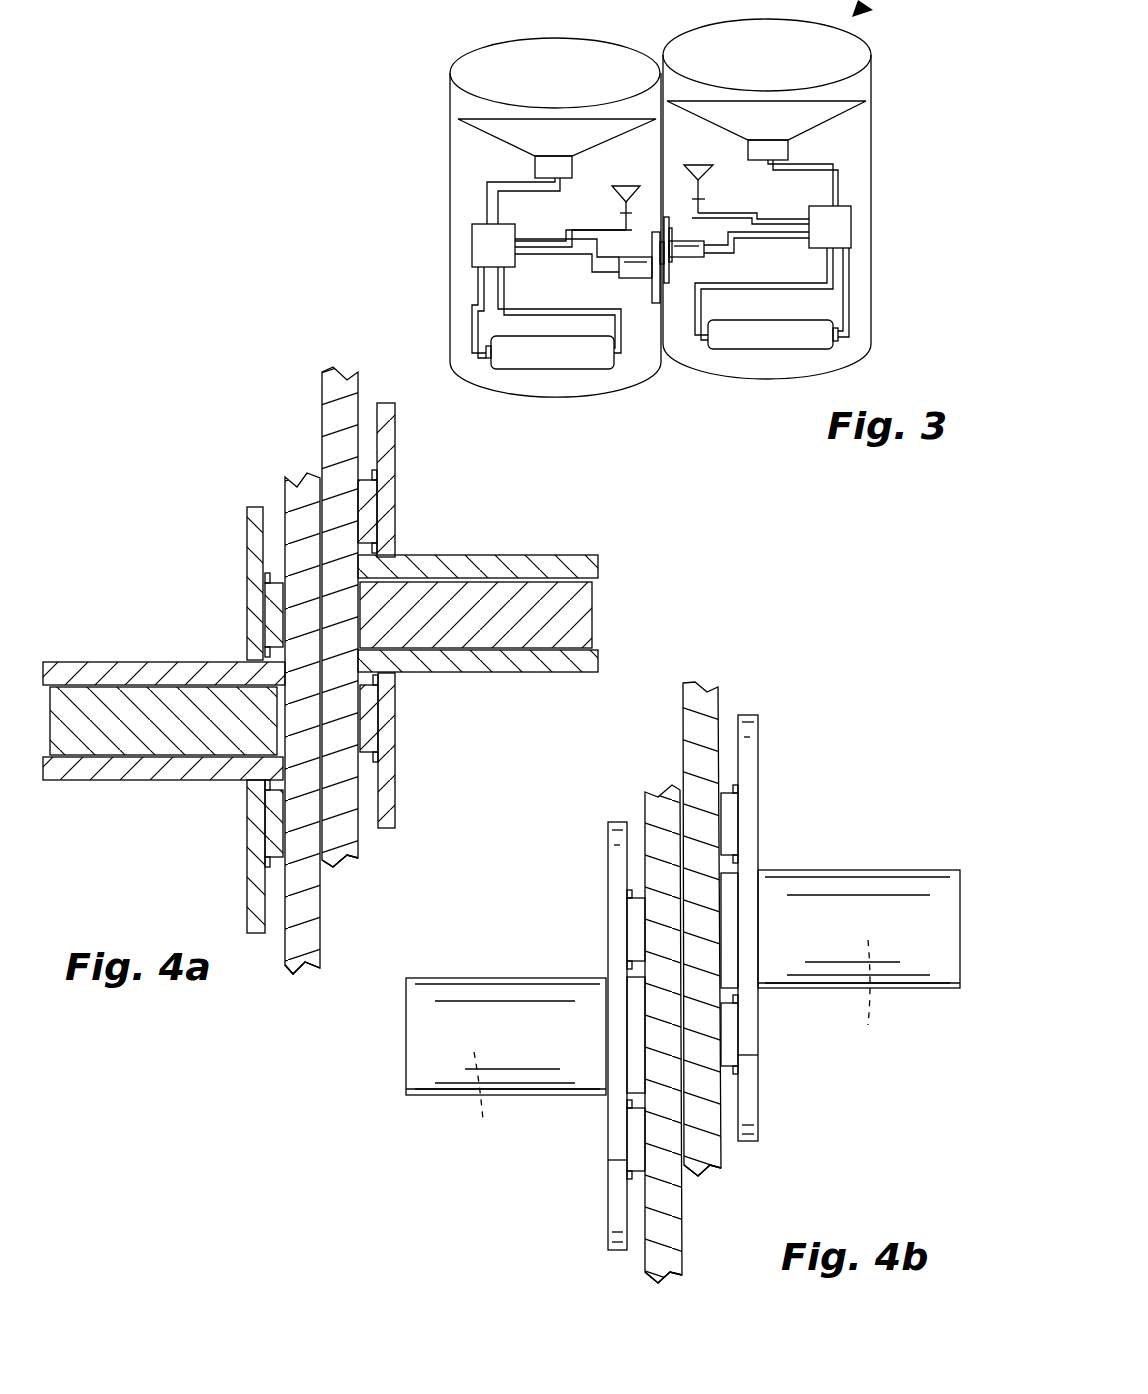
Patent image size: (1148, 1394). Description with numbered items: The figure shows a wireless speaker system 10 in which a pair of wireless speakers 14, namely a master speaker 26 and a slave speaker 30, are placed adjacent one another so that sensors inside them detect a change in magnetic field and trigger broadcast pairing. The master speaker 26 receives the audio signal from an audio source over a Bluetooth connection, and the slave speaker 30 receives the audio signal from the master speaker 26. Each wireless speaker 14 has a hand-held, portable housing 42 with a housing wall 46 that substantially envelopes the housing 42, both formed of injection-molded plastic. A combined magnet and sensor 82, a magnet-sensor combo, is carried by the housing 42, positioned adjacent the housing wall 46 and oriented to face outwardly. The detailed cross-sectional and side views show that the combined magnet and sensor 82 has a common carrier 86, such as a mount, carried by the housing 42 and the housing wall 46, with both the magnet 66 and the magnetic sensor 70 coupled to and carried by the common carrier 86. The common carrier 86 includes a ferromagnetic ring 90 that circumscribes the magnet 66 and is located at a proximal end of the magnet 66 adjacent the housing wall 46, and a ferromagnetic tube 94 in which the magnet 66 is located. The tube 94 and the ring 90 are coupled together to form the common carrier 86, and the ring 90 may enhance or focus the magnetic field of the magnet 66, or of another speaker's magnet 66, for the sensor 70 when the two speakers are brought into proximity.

In FIG. 3, the wireless speaker system 10 is at (907, 0).
In FIG. 3, the wireless speaker 14 is at (671, 230).
In FIG. 3, the master speaker 26 is at (546, 397).
In FIG. 4A, the master speaker 26 is at (287, 955).
In FIG. 4B, the master speaker 26 is at (647, 1268).
In FIG. 3, the slave speaker 30 is at (775, 379).
In FIG. 4A, the slave speaker 30 is at (360, 847).
In FIG. 4B, the slave speaker 30 is at (721, 1159).
In FIG. 4A, the housing 42 is at (300, 968).
In FIG. 4B, the housing 42 is at (697, 1169).
In FIG. 4A, the housing wall 46 is at (297, 480).
In FIG. 4B, the housing wall 46 is at (658, 797).
In FIG. 4A, the magnet 66 is at (110, 740).
In FIG. 4B, the magnet 66 is at (669, 1050).
In FIG. 4A, the magnetic sensor 70 is at (272, 607).
In FIG. 4B, the magnetic sensor 70 is at (635, 918).
In FIG. 3, the combined magnet and sensor 82 is at (636, 274).
In FIG. 4A, the combined magnet and sensor 82 is at (190, 773).
In FIG. 4B, the combined magnet and sensor 82 is at (553, 1087).
In FIG. 4A, the common carrier 86 is at (252, 867).
In FIG. 4B, the common carrier 86 is at (616, 1178).
In FIG. 4A, the ferromagnetic ring 90 is at (248, 542).
In FIG. 4B, the ferromagnetic ring 90 is at (612, 854).
In FIG. 4A, the ferromagnetic tube 94 is at (65, 668).
In FIG. 4B, the ferromagnetic tube 94 is at (474, 980).